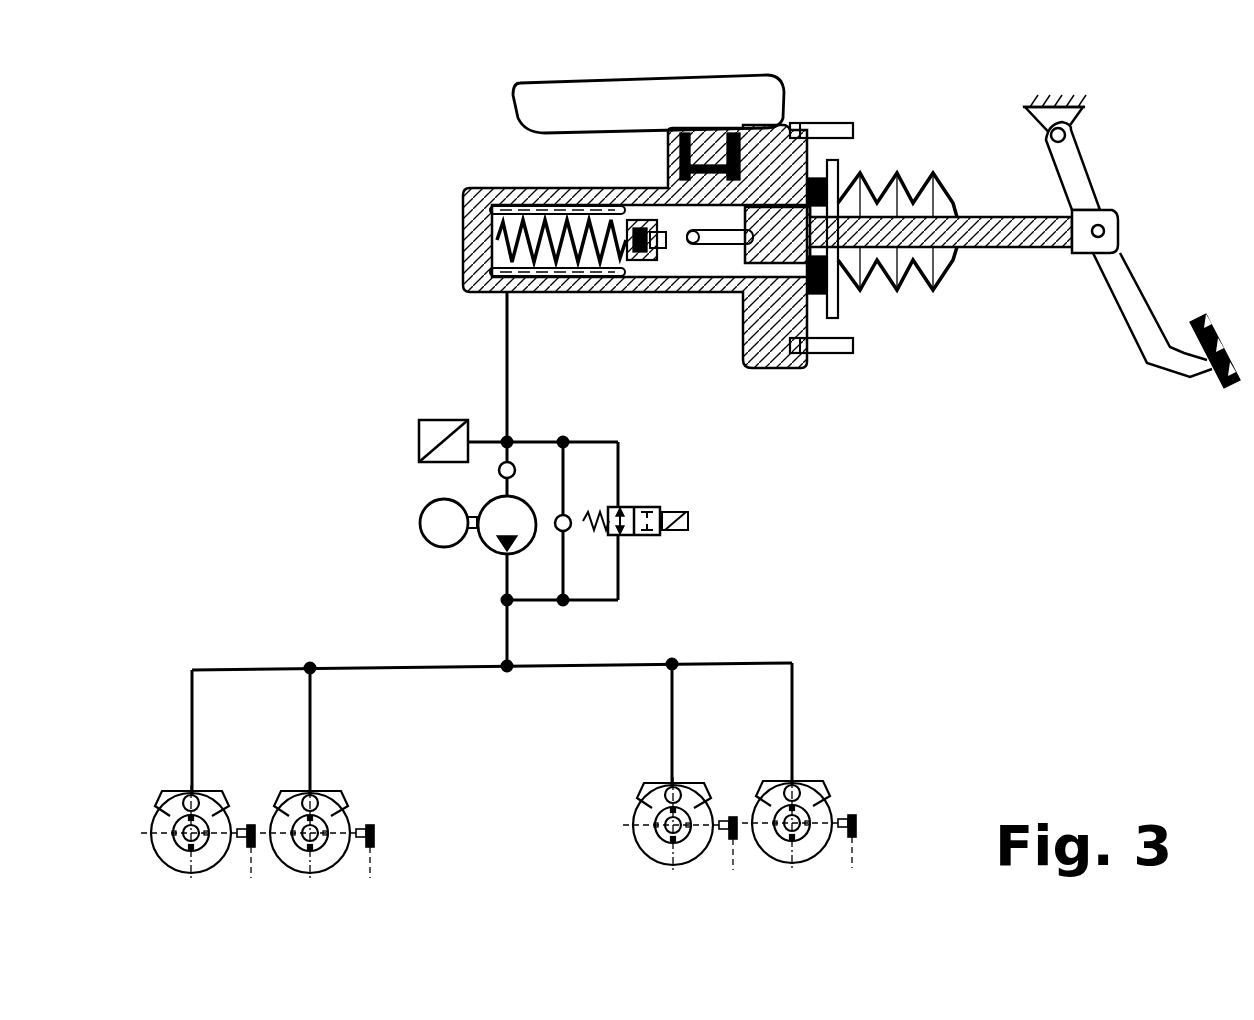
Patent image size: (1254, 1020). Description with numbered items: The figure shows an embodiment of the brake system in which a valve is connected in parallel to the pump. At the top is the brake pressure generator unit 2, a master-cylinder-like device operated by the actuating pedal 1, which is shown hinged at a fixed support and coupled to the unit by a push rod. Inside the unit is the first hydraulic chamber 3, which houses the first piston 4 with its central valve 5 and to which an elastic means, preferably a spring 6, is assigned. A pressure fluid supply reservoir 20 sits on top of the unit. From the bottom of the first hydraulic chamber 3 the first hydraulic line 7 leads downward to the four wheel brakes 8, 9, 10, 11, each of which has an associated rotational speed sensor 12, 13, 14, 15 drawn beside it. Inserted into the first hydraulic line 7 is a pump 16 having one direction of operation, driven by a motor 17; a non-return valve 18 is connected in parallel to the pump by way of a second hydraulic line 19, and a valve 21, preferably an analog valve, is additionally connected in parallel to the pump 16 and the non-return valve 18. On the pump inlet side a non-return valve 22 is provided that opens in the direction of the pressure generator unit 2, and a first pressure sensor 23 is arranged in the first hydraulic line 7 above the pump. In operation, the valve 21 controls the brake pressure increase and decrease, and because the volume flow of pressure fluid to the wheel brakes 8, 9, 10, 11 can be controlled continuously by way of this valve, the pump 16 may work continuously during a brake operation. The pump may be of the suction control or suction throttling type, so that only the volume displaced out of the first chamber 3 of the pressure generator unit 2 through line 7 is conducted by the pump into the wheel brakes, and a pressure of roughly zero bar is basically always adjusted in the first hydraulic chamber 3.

The actuating pedal 1 is at (1137, 273).
The brake pressure generator unit 2 is at (442, 160).
The first hydraulic chamber 3 is at (542, 220).
The first piston 4 is at (705, 262).
The central valve 5 is at (612, 262).
The spring 6 is at (542, 262).
The first hydraulic line 7 is at (505, 352).
The wheel brake 8 is at (160, 866).
The wheel brake 9 is at (340, 866).
The wheel brake 10 is at (636, 850).
The wheel brake 11 is at (813, 855).
The rotational speed sensor 12 is at (250, 823).
The rotational speed sensor 13 is at (380, 830).
The rotational speed sensor 14 is at (734, 815).
The rotational speed sensor 15 is at (856, 822).
The pump 16 is at (488, 548).
The motor 17 is at (420, 523).
The non-return valve 18 is at (569, 515).
The second hydraulic line 19 is at (621, 455).
The pressure fluid supply reservoir 20 is at (784, 86).
The valve 21 is at (651, 536).
The non-return valve 22 is at (499, 470).
The first pressure sensor 23 is at (436, 420).